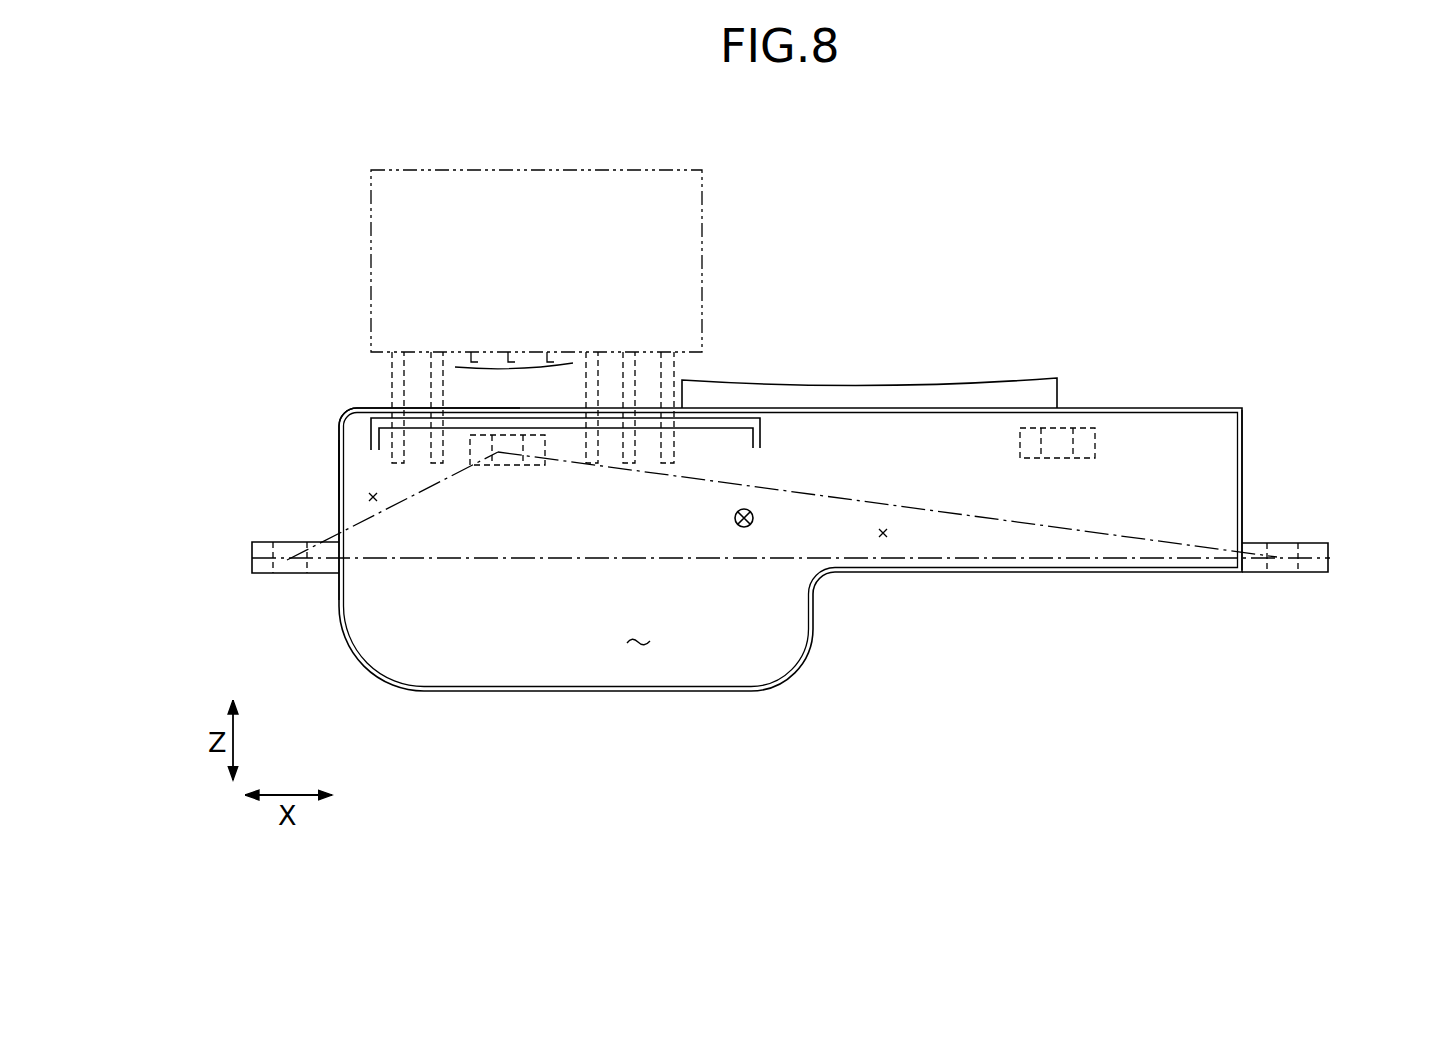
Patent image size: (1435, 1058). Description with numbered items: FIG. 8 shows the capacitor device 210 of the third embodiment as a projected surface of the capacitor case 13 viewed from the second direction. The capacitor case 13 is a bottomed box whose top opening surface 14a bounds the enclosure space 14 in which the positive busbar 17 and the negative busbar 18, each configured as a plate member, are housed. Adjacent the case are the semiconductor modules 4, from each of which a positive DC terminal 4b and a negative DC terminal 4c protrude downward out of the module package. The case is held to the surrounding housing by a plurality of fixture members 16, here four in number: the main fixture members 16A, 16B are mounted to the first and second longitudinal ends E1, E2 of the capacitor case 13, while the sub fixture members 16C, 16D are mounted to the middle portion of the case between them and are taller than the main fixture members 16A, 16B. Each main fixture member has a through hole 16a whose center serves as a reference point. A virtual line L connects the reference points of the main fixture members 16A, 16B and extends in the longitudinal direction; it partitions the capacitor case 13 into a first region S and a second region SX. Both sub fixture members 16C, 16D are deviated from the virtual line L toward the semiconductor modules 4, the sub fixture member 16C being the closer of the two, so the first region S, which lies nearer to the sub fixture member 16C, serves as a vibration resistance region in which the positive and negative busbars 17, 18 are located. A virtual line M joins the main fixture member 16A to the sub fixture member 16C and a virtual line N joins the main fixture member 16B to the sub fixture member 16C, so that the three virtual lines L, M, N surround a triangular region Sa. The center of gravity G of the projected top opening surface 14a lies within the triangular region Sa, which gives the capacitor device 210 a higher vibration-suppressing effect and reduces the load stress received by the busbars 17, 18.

The semiconductor module 4 is at (642, 167).
The positive DC terminal 4b is at (680, 370).
The negative DC terminal 4c is at (626, 315).
The capacitor case 13 is at (1228, 406).
The enclosure space 14 is at (355, 419).
The top opening surface 14a is at (429, 454).
The fixture members 16 is at (774, 458).
The main fixture member 16A is at (287, 539).
The main fixture member 16B is at (1277, 540).
The sub fixture member 16C is at (501, 431).
The sub fixture member 16D is at (1063, 425).
The through hole 16a is at (290, 574).
The positive busbar 17 is at (366, 438).
The negative busbar 18 is at (507, 426).
The capacitor device 210 is at (1081, 333).
The first longitudinal end E1 is at (337, 517).
The second longitudinal end E2 is at (1243, 443).
The first region S is at (373, 497).
The triangular region Sa is at (884, 536).
The virtual line M is at (383, 513).
The virtual line N is at (1160, 538).
The virtual line L is at (1028, 558).
The center of gravity G is at (746, 532).
The second region SX is at (638, 648).